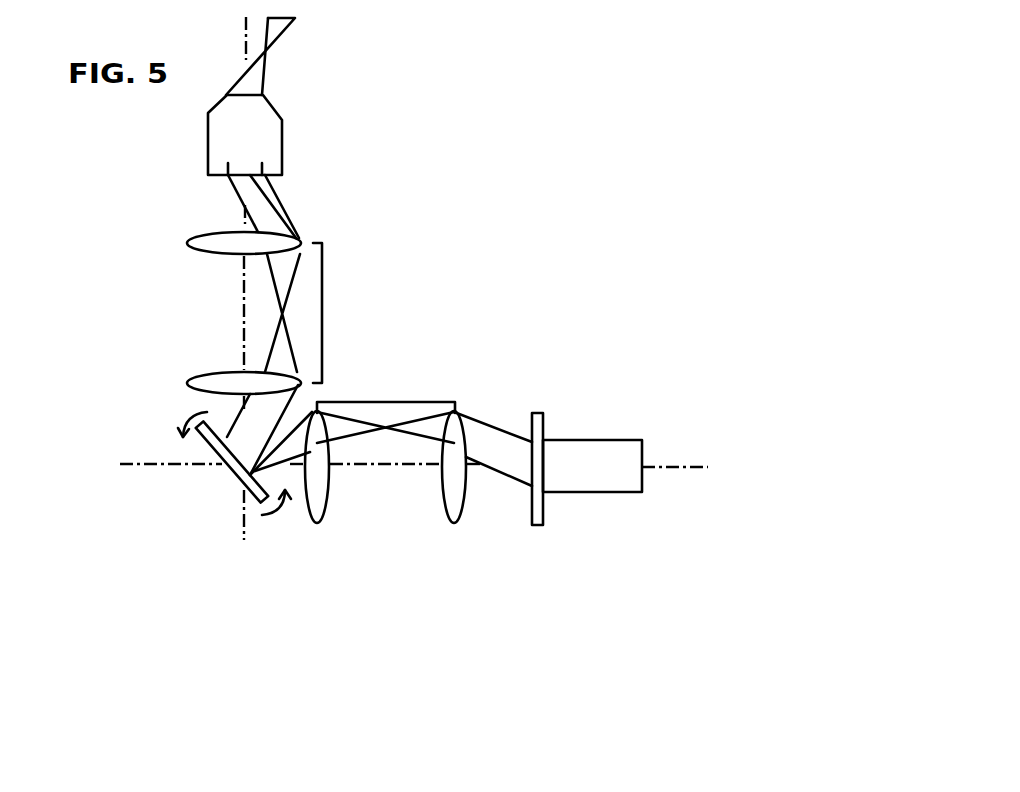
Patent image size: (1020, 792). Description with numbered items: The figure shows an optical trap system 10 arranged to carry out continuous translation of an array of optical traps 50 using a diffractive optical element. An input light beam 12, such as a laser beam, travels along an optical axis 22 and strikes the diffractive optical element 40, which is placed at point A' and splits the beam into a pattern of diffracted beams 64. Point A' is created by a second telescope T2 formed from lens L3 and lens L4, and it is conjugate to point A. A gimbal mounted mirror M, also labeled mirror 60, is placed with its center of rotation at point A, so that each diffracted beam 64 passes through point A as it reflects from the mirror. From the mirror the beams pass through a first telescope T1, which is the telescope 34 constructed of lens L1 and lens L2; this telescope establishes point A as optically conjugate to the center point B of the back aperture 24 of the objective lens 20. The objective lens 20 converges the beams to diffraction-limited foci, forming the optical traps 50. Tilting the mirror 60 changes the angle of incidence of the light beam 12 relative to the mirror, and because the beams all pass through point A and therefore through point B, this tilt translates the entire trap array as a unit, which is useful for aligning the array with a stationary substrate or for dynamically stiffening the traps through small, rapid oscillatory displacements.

The optical trap system 10 is at (566, 297).
The light beam 12 is at (598, 492).
The objective lens 20 is at (268, 133).
The optical axis 22 is at (244, 541).
The back aperture 24 is at (252, 180).
The telescope 34 is at (322, 277).
The diffractive optical element 40 is at (547, 422).
The optical trap 50 is at (266, 56).
The gimbal mounted mirror 60 is at (196, 444).
The diffracted beams 64 is at (498, 477).
The center point B is at (260, 190).
The point A is at (248, 473).
The point A' is at (570, 525).
The mirror M is at (213, 430).
The lens L1 is at (230, 386).
The lens L2 is at (228, 241).
The lens L3 is at (455, 486).
The lens L4 is at (316, 486).
The telescope T1 is at (310, 313).
The telescope T2 is at (386, 408).